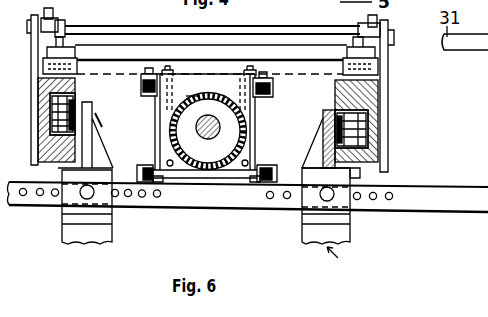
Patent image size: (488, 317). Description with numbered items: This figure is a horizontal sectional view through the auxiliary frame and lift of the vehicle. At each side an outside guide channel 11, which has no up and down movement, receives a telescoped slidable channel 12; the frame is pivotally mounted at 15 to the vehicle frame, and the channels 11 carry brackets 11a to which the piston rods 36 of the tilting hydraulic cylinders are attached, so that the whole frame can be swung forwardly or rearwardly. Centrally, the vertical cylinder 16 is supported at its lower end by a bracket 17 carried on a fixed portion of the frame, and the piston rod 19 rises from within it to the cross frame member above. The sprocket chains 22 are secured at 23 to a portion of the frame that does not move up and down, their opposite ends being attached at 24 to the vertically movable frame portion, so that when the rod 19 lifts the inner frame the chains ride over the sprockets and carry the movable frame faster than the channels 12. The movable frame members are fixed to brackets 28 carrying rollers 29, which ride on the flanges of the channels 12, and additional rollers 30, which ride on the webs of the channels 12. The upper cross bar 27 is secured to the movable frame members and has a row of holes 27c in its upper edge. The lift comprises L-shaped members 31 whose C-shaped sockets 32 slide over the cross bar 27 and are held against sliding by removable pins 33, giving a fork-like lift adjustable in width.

The outside guide channels 11 is at (38, 81).
The brackets 11a is at (78, 56).
The slidable channels 12 is at (42, 97).
The pivot 15 is at (391, 40).
The vertical cylinder 16 is at (187, 99).
The bracket 17 is at (258, 136).
The piston rod 19 is at (210, 115).
The sprocket chains 22 is at (145, 165).
The chain attachment 23 is at (148, 68).
The chain attachment 24 is at (162, 178).
The upper cross bar 27 is at (456, 201).
The holes or sockets 27c is at (22, 196).
The brackets 28 is at (93, 122).
The rollers 29 is at (66, 104).
The rollers 30 is at (366, 126).
The L-shaped members 31 is at (84, 244).
The C-shaped sockets 32 is at (362, 178).
The removable pins 33 is at (83, 196).
The piston rods 36 is at (66, 26).